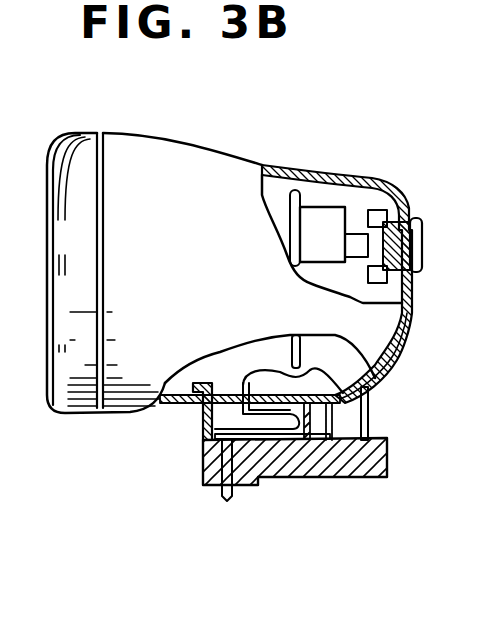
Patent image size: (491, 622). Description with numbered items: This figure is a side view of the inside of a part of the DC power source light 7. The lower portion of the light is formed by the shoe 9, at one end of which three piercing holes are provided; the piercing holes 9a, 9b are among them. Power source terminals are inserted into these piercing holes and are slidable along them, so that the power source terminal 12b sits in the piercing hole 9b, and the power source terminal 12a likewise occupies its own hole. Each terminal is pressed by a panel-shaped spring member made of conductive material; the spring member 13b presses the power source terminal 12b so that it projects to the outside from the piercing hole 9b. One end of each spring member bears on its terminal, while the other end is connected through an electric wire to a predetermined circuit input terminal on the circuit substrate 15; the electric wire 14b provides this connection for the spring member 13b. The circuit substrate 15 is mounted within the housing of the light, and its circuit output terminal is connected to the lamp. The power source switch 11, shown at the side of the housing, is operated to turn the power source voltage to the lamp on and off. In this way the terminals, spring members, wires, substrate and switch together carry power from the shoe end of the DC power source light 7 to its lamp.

The DC power source light 7 is at (163, 147).
The circuit substrate 15 is at (302, 172).
The power source switch 11 is at (423, 246).
The electric wire 14b is at (368, 406).
The spring member 13b is at (282, 442).
The shoe 9 is at (363, 478).
The piercing hole 9b is at (210, 453).
The power source terminal 12b is at (227, 501).
The piercing hole 9a is at (490, 8).
The power source terminal 12a is at (473, 70).